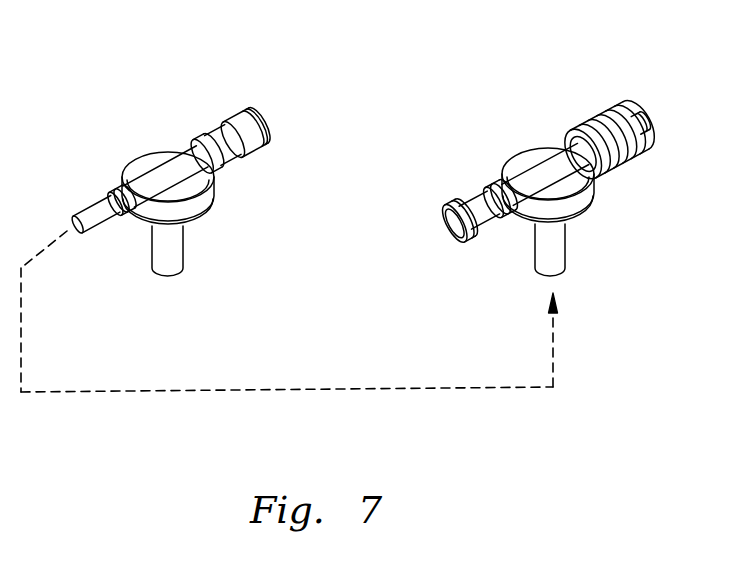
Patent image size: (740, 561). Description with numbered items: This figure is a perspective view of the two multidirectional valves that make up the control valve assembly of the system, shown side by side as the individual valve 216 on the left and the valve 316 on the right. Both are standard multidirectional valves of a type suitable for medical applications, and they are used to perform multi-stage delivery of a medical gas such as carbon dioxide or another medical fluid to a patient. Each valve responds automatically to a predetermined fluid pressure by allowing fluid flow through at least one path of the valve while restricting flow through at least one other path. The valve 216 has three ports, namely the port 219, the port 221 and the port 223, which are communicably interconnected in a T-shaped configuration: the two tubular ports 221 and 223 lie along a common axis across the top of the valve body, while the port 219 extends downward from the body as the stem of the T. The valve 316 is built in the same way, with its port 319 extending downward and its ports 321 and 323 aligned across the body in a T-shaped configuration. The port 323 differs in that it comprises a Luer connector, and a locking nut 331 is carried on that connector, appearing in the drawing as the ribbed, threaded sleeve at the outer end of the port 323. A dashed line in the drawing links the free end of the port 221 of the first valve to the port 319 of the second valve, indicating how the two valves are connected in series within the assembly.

The multidirectional valve 216 is at (147, 153).
The port 223 is at (208, 138).
The port 221 is at (92, 207).
The port 219 is at (152, 252).
The multidirectional valve 316 is at (531, 153).
The port 321 is at (473, 195).
The locking nut 331 is at (597, 108).
The port 323 is at (653, 117).
The port 319 is at (537, 250).